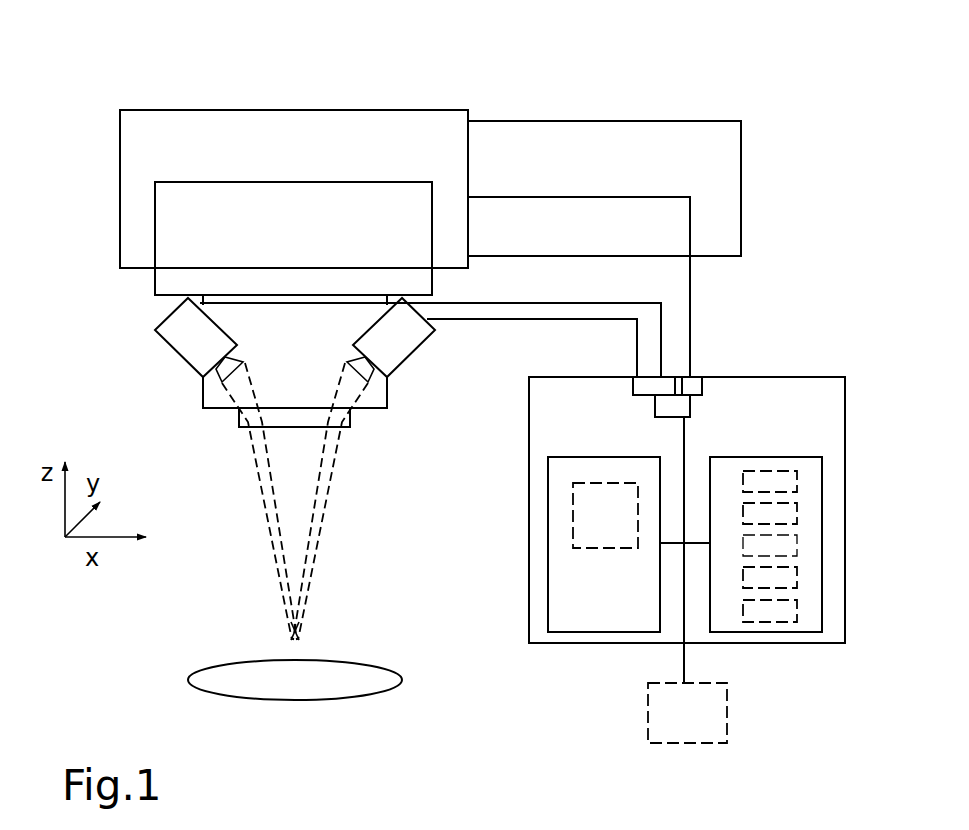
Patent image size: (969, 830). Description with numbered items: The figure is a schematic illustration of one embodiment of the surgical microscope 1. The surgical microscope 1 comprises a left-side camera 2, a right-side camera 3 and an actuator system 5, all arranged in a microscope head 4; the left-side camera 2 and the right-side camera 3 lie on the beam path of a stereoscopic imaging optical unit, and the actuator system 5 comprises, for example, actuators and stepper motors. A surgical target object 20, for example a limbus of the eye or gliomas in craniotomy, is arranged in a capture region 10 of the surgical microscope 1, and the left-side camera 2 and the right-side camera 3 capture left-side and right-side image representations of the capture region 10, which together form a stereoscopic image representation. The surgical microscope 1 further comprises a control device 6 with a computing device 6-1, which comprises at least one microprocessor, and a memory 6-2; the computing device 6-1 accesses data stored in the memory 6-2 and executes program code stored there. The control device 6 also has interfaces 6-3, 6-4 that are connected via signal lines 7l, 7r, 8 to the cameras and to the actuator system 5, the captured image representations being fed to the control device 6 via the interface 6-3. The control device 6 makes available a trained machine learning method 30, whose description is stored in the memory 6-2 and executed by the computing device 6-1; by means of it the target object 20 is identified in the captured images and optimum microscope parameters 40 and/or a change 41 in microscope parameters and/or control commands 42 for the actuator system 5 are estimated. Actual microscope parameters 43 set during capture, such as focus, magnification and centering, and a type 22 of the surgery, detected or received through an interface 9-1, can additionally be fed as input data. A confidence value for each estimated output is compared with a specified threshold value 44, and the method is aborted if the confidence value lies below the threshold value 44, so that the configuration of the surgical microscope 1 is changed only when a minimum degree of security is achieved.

The surgical microscope 1 is at (108, 87).
The left-side camera 2 is at (157, 327).
The right-side camera 3 is at (410, 352).
The microscope head 4 is at (155, 242).
The actuator system 5 is at (120, 198).
The control device 6 is at (790, 377).
The computing device 6-1 is at (588, 457).
The memory 6-2 is at (797, 457).
The interface 6-3 is at (633, 388).
The interface 6-4 is at (702, 382).
The signal line 7l is at (457, 303).
The signal line 7r is at (487, 320).
The signal line 8 is at (627, 197).
The interface 9-1 is at (728, 708).
The capture region 10 is at (189, 678).
The surgical target object 20 is at (273, 638).
The type of a surgery 22 is at (684, 660).
The trained machine learning method 30 is at (573, 512).
The optimum microscope parameters 40 is at (798, 478).
The change in microscope parameters 41 is at (797, 519).
The control commands 42 is at (797, 550).
The microscope parameters 43 is at (797, 583).
The specified threshold value 44 is at (797, 617).